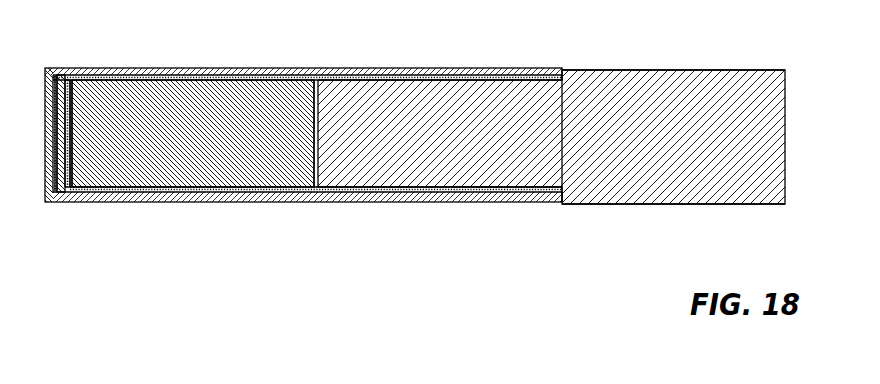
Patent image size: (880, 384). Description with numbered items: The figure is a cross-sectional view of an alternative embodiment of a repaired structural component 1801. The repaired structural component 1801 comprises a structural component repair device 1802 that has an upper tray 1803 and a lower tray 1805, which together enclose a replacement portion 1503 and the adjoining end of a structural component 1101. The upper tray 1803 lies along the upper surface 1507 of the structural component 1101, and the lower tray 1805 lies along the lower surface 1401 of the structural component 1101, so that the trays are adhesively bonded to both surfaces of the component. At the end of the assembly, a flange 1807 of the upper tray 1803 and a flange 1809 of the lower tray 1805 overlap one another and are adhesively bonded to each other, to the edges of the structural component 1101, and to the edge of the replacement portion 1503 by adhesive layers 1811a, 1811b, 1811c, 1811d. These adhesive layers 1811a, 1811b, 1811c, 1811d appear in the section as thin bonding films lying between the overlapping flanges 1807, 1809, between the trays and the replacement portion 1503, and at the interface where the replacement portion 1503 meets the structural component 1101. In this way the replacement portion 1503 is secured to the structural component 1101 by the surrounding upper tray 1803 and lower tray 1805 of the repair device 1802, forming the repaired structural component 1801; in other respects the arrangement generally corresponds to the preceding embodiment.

The upper tray 1803 is at (132, 68).
The lower tray 1805 is at (125, 203).
The flange 1807 is at (48, 100).
The flange 1809 is at (70, 108).
The adhesive layer 1811a is at (50, 182).
The adhesive layer 1811b is at (73, 170).
The adhesive layer 1811c is at (352, 78).
The adhesive layer 1811d is at (318, 145).
The replacement portion 1503 is at (270, 168).
The structural component 1101 is at (737, 70).
The upper surface 1507 is at (623, 70).
The lower surface 1401 is at (603, 203).
The structural component repair device 1802 is at (291, 204).
The repaired structural component 1801 is at (420, 223).